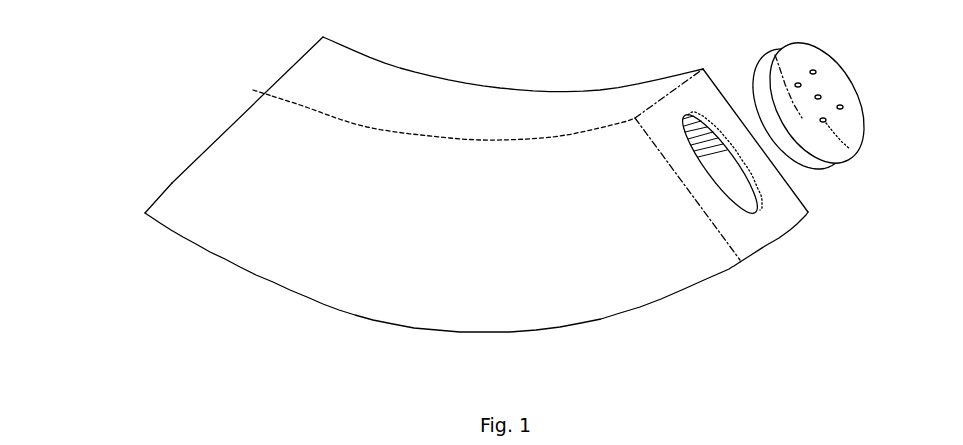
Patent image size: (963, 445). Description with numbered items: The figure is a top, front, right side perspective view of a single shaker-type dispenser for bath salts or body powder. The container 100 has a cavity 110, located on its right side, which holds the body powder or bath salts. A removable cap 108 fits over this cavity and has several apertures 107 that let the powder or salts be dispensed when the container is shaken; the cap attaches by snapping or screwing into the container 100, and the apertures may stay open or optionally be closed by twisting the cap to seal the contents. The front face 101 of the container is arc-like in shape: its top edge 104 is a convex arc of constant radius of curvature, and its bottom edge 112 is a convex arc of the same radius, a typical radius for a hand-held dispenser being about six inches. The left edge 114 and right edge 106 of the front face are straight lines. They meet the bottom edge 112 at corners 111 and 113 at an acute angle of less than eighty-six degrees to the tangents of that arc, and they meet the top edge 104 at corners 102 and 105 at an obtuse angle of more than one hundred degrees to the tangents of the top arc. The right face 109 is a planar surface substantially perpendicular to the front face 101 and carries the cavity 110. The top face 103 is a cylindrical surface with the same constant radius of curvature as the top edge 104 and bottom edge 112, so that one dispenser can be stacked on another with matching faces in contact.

The container 100 is at (158, 169).
The front face 101 is at (273, 183).
The corner 102 is at (262, 98).
The top face 103 is at (365, 138).
The top edge 104 is at (447, 138).
The corner 105 is at (630, 130).
The right edge 106 is at (661, 152).
The apertures 107 is at (815, 72).
The removable cap 108 is at (843, 128).
The right face 109 is at (777, 207).
The cavity 110 is at (742, 187).
The corner 111 is at (722, 255).
The bottom edge 112 is at (373, 320).
The corner 113 is at (155, 212).
The left edge 114 is at (173, 182).